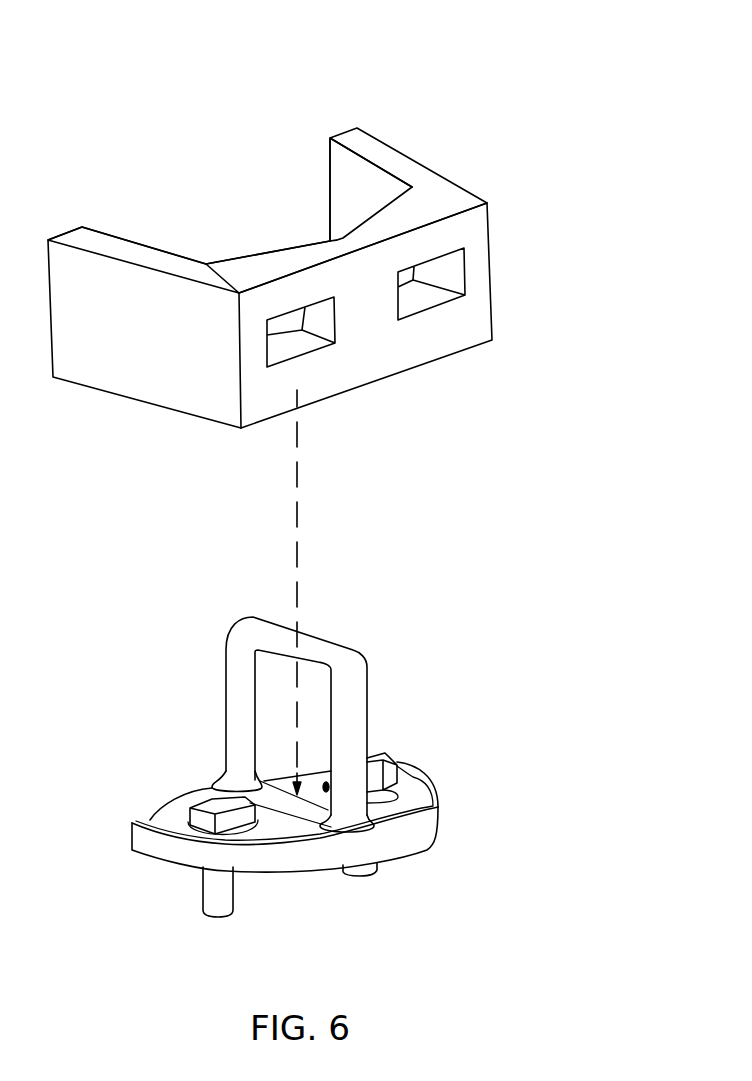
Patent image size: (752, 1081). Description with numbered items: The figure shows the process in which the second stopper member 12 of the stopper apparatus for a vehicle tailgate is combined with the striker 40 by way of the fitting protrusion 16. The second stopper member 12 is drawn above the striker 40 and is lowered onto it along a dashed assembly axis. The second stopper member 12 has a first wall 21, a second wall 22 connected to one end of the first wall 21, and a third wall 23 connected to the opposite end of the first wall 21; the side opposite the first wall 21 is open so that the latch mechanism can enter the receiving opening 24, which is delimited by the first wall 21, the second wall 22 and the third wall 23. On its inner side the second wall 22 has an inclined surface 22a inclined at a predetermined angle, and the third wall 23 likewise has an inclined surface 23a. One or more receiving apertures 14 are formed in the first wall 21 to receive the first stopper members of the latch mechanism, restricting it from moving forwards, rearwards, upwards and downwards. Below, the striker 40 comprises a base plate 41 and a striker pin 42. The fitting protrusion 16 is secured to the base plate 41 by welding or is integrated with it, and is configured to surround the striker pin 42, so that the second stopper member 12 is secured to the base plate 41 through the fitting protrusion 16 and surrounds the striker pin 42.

The second stopper member 12 is at (320, 252).
The receiving apertures 14 is at (285, 347).
The fitting protrusion 16 is at (427, 822).
The first wall 21 is at (349, 303).
The second wall 22 is at (144, 304).
The inclined surface 22a is at (147, 244).
The third wall 23 is at (413, 144).
The inclined surface 23a is at (340, 176).
The receiving opening 24 is at (241, 235).
The striker 40 is at (304, 738).
The base plate 41 is at (208, 817).
The striker pin 42 is at (310, 633).